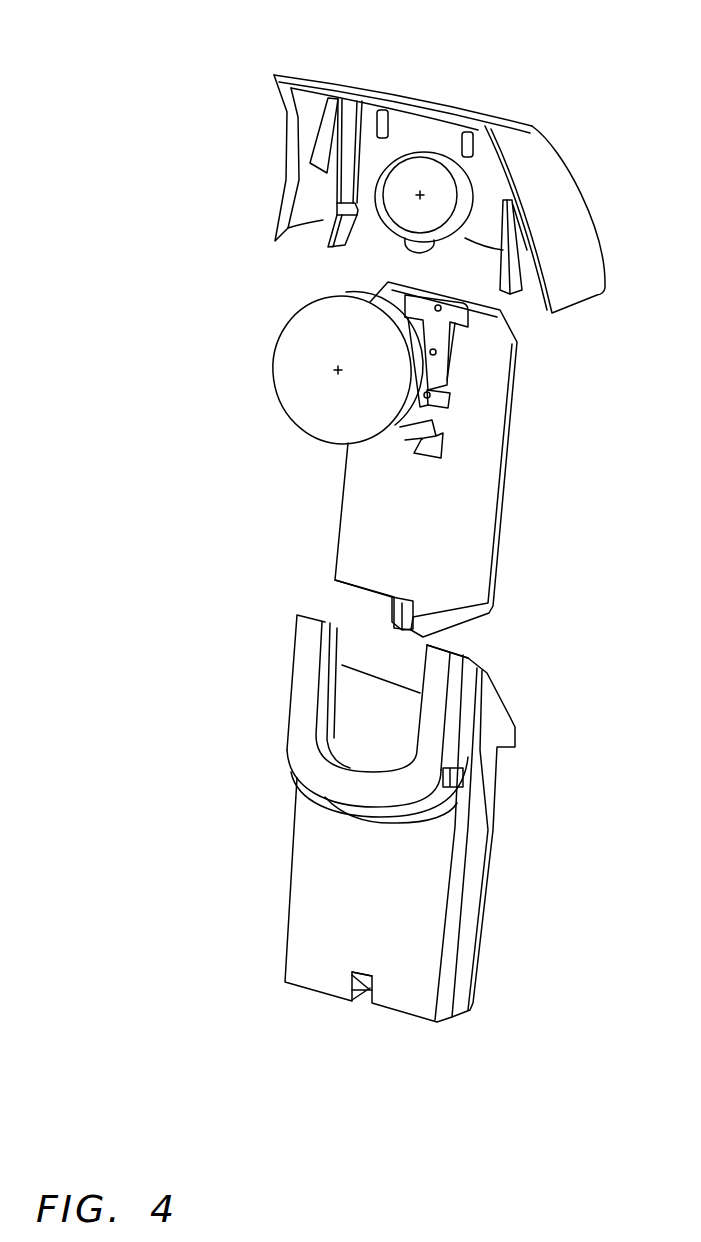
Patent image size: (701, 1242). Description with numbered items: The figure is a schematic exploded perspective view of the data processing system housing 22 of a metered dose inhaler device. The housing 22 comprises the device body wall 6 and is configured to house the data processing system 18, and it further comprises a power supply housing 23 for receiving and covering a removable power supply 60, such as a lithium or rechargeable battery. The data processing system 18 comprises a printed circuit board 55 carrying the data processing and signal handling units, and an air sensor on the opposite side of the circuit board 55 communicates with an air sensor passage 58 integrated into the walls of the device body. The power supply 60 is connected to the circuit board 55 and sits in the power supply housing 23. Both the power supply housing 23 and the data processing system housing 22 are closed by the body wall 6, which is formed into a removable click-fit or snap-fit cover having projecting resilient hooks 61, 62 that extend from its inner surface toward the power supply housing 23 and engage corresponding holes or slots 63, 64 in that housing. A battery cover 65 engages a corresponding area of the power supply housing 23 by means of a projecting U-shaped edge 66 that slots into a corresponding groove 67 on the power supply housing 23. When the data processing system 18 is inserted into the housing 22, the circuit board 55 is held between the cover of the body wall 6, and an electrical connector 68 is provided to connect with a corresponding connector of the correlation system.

The body wall 6 is at (406, 177).
The power supply housing 23 is at (425, 137).
The battery cover 65 is at (388, 150).
The projecting resilient hook 61 is at (328, 247).
The projecting U-shaped edge 66 is at (395, 238).
The projecting resilient hook 62 is at (515, 279).
The data processing system 18 is at (422, 459).
The air sensor passage 58 is at (420, 625).
The electrical connector 68 is at (365, 582).
The power supply 60 is at (285, 362).
The data processing system housing 22 is at (403, 785).
The printed circuit board 55 is at (348, 660).
The groove 67 is at (328, 620).
The hole or slot 63 is at (288, 745).
The hole or slot 64 is at (462, 790).